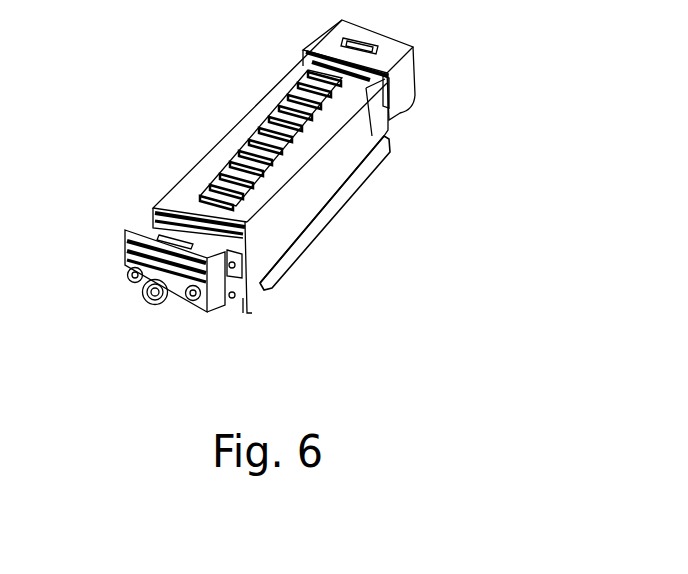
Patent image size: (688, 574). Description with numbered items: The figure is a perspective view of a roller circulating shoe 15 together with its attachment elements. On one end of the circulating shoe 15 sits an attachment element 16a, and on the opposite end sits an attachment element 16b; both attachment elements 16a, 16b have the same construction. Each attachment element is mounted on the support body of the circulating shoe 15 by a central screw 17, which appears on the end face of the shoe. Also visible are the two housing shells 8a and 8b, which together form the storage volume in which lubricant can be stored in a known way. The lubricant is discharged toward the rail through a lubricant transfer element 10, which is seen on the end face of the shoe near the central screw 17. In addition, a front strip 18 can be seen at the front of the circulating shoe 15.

The circulating shoe 15 is at (208, 120).
The housing shell 8b is at (153, 210).
The housing shell 8a is at (125, 230).
The front strip 18 is at (125, 237).
The central screw 17 is at (141, 284).
The lubricant transfer element 10 is at (187, 298).
The attachment element 16a is at (265, 312).
The attachment element 16b is at (417, 115).